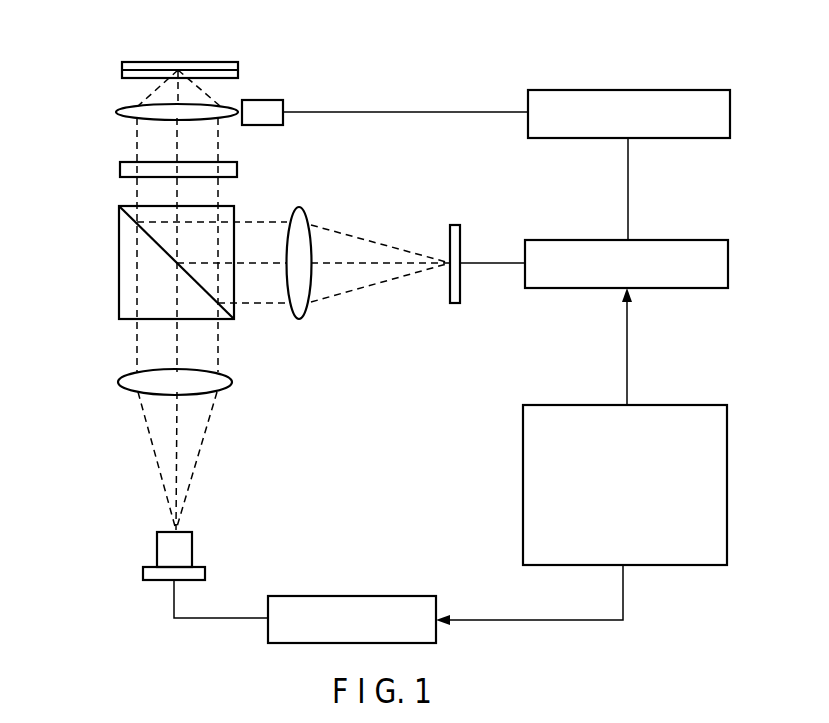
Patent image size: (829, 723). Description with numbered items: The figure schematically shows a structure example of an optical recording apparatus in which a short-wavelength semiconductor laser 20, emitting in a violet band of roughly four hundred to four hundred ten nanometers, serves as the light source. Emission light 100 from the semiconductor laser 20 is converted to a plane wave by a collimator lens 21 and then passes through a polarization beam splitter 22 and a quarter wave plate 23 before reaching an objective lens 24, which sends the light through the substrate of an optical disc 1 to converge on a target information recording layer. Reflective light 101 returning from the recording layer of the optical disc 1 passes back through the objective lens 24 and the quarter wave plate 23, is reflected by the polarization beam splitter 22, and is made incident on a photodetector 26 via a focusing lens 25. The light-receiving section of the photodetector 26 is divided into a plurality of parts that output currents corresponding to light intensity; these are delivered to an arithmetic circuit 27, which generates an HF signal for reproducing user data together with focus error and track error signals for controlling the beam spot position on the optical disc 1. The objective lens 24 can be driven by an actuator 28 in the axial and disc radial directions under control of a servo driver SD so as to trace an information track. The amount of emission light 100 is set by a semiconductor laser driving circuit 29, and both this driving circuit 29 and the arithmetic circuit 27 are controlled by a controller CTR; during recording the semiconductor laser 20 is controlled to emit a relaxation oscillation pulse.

The optical disc 1 is at (240, 70).
The semiconductor laser 20 is at (157, 550).
The collimator lens 21 is at (118, 382).
The polarization beam splitter 22 is at (119, 260).
The quarter wave plate 23 is at (120, 170).
The objective lens 24 is at (115, 112).
The focusing lens 25 is at (300, 208).
The photodetector 26 is at (457, 224).
The arithmetic circuit 27 is at (691, 240).
The actuator 28 is at (283, 103).
The semiconductor laser driving circuit 29 is at (342, 596).
The emission light 100 is at (192, 476).
The reflective light 101 is at (262, 306).
The servo driver SD is at (693, 90).
The controller CTR is at (690, 405).